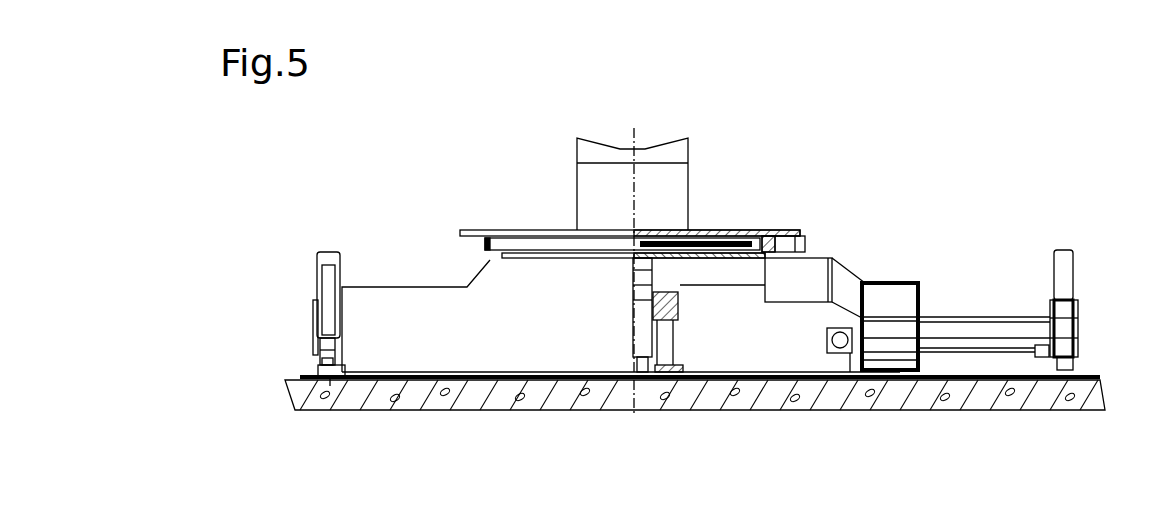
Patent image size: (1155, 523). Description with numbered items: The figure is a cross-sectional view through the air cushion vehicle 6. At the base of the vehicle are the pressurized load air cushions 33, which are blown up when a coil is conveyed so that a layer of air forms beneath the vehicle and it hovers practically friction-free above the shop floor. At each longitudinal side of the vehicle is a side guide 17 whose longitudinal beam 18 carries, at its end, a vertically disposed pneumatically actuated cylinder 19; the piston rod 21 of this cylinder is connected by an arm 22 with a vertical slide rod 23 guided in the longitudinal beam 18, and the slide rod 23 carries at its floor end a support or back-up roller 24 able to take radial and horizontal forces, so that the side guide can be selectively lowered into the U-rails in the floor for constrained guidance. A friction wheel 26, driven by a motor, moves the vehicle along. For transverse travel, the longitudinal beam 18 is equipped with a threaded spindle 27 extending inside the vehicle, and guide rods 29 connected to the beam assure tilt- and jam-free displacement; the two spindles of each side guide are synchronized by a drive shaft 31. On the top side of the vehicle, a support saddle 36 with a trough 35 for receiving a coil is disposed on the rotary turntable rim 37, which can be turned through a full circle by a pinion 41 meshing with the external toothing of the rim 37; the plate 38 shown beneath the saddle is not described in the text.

The air cushion vehicle 6 is at (888, 148).
The side guide 17 is at (315, 330).
The longitudinal beam 18 is at (1080, 308).
The pneumatically actuated cylinder 19 is at (322, 278).
The piston rod 21 is at (325, 350).
The arm 22 is at (322, 362).
The vertical slide rod 23 is at (1068, 261).
The support or back-up roller 24 is at (1075, 366).
The friction wheel 26 is at (645, 385).
The threaded spindle 27 is at (983, 350).
The guide rod 29 is at (950, 330).
The drive shaft 31 is at (855, 388).
The load air cushion 33 is at (500, 390).
The trough or depression 35 is at (597, 140).
The support saddle 36 is at (577, 190).
The rotary turntable rim 37 is at (745, 228).
The top plate 38 is at (485, 246).
The pinion 41 is at (808, 245).